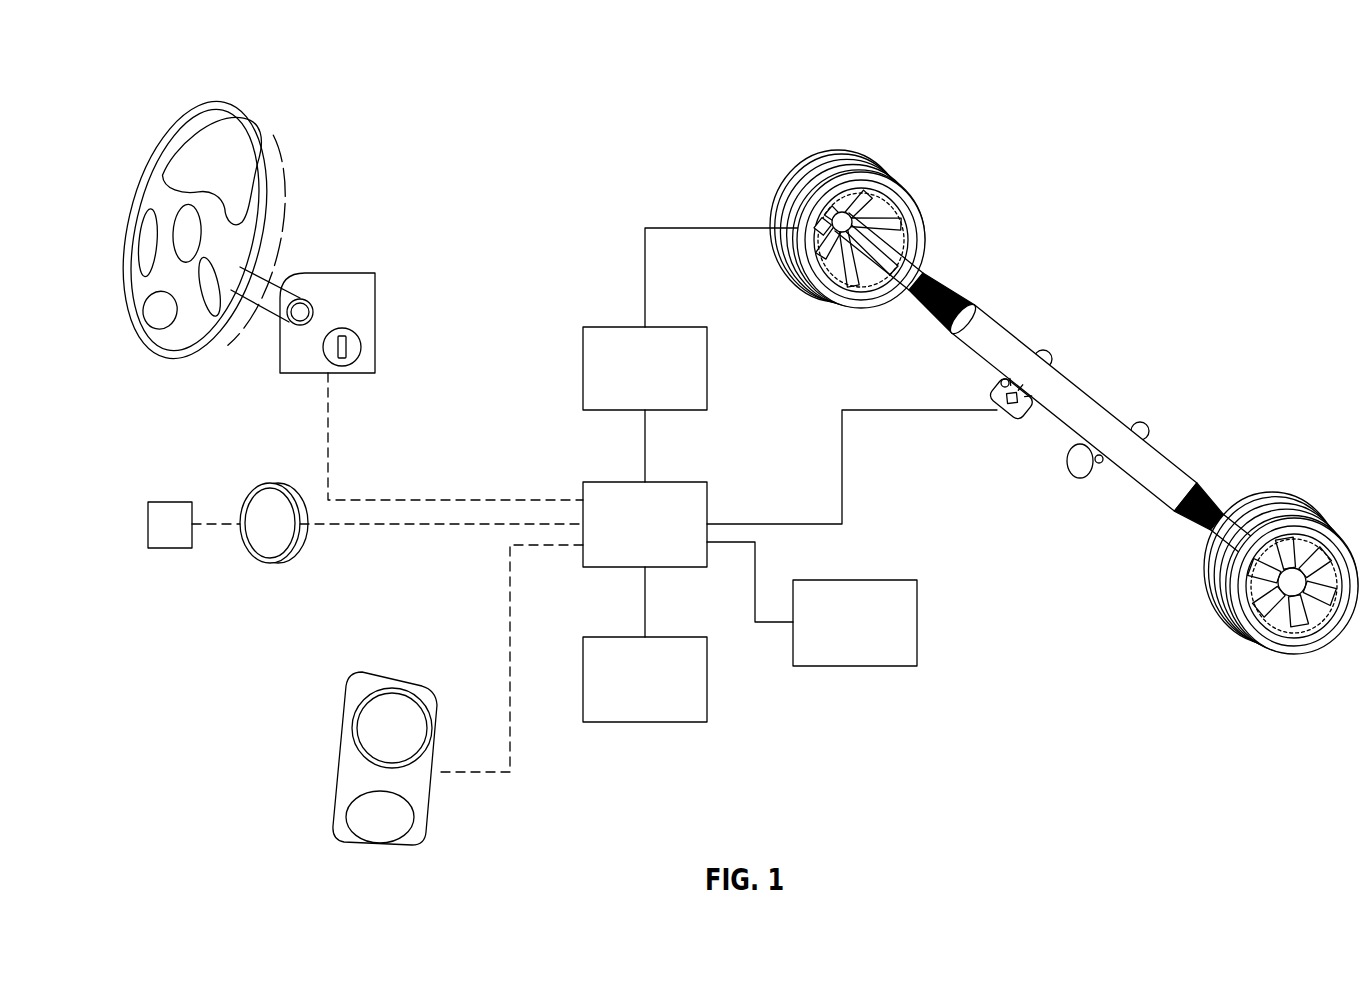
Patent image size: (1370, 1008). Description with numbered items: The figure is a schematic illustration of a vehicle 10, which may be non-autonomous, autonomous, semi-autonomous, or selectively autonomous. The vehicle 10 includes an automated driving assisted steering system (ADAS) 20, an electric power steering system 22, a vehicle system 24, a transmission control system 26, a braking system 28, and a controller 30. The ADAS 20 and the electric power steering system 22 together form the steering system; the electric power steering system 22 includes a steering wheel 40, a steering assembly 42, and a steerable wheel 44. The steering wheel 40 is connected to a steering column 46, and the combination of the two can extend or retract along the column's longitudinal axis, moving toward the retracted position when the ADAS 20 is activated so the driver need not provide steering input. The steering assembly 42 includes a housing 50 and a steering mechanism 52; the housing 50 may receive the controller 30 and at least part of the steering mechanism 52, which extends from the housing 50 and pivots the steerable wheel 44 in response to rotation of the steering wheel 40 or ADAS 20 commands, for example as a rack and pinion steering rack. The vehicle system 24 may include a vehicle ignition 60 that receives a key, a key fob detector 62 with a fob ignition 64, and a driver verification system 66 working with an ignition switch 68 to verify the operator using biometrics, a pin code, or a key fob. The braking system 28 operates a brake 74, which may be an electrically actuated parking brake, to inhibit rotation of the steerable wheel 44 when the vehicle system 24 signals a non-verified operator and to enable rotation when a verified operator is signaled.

The vehicle 10 is at (811, 57).
The automated driving assisted steering system (ADAS) 20 is at (633, 694).
The electric power steering system 22 is at (1053, 384).
The vehicle system 24 is at (187, 507).
The transmission control system 26 is at (843, 637).
The braking system 28 is at (633, 382).
The controller 30 is at (633, 538).
The steering wheel 40 is at (246, 103).
The steering assembly 42 is at (836, 245).
The steerable wheel 44 is at (852, 150).
The steering column 46 is at (300, 268).
The housing 50 is at (1024, 440).
The steering mechanism 52 is at (1032, 340).
The vehicle ignition 60 is at (358, 328).
The key fob detector 62 is at (153, 502).
The fob ignition 64 is at (250, 489).
The driver verification system 66 is at (396, 845).
The ignition switch 68 is at (417, 693).
The brake 74 is at (818, 220).